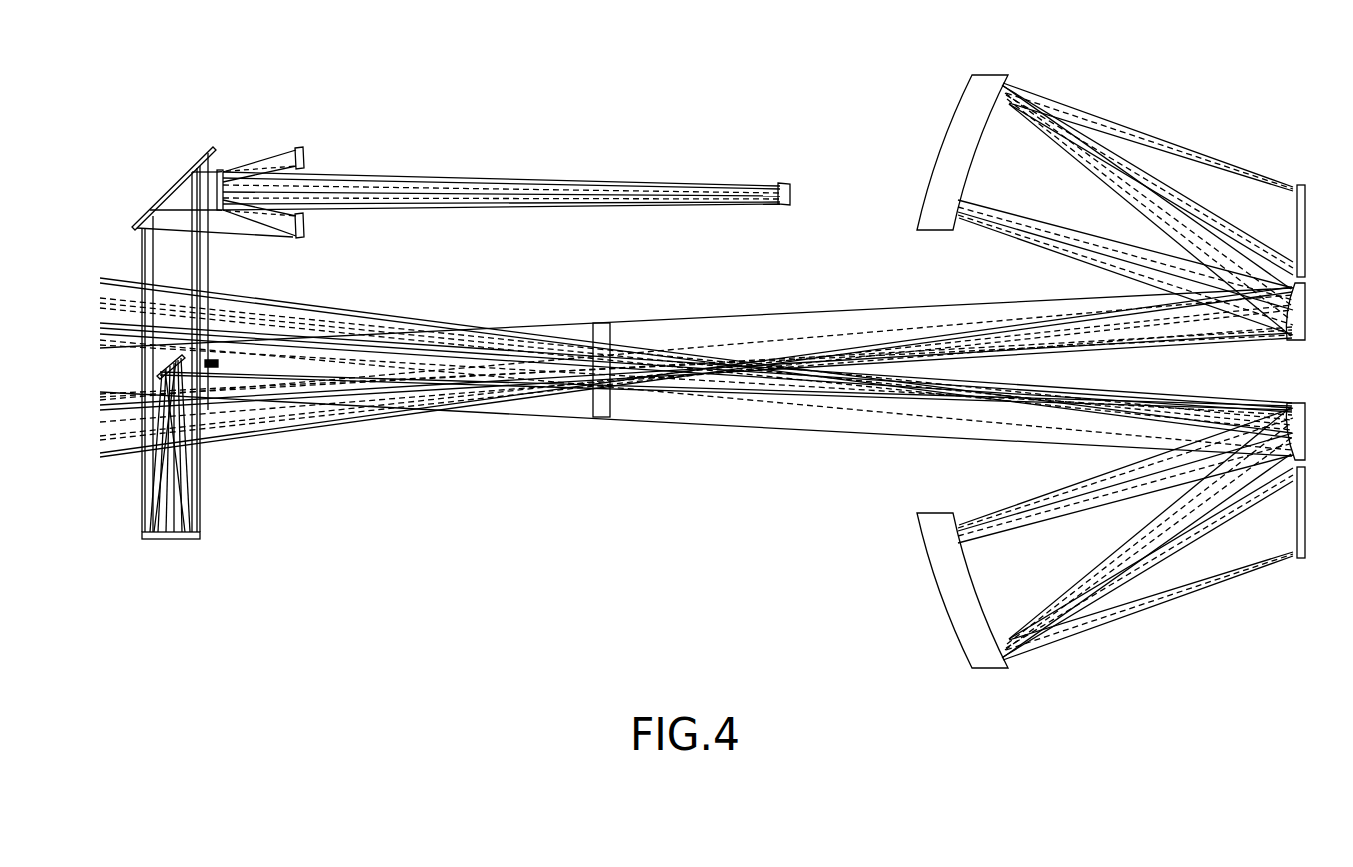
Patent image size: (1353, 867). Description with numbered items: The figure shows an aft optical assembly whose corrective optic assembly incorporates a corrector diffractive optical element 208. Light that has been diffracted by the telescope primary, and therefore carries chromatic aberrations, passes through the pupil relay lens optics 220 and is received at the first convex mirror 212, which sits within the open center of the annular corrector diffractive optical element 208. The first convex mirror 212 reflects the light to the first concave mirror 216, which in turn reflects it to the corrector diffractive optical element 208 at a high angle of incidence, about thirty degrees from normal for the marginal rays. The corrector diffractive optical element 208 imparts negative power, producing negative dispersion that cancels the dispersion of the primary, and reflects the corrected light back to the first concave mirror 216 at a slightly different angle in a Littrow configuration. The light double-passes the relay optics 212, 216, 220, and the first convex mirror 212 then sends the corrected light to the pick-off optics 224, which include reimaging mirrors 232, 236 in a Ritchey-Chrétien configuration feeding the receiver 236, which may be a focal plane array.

The pick-off optics 224 is at (179, 133).
The receiver 236 is at (286, 250).
The reimaging mirror 232 is at (182, 553).
The pupil relay lens optics 220 is at (597, 420).
The first concave mirror 216 is at (991, 100).
The corrector diffractive optical element 208 is at (1293, 183).
The first convex mirror 212 is at (1291, 342).